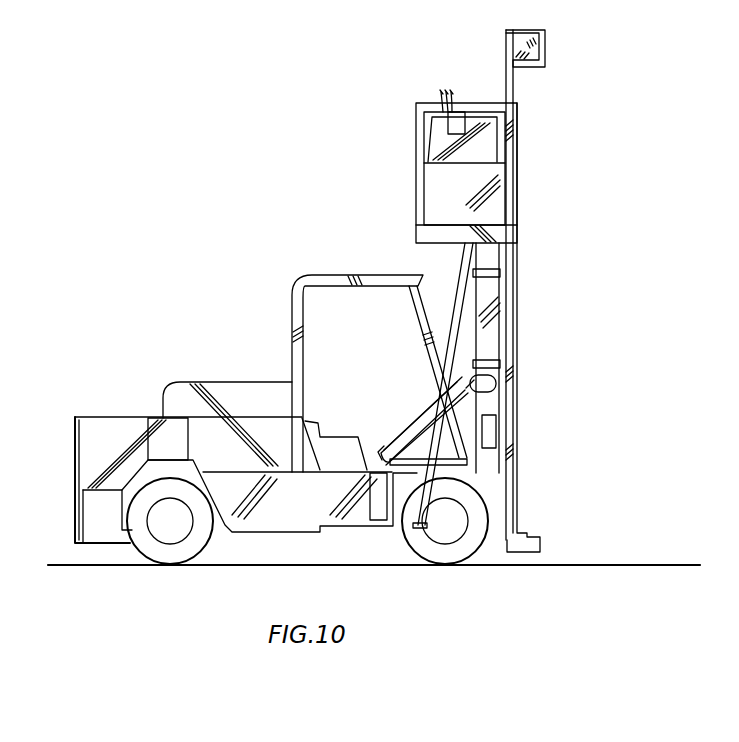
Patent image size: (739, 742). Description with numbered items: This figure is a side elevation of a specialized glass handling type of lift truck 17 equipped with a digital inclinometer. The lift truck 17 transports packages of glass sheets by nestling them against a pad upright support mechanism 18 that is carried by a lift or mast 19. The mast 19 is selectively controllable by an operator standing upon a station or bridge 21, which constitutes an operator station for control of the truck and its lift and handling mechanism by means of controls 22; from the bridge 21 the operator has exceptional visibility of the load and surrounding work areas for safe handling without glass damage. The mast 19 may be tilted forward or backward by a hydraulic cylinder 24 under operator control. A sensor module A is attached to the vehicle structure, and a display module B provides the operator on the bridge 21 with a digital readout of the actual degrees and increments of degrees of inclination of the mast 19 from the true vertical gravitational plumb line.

The lift truck 17 is at (150, 400).
The pad upright support mechanism 18 is at (513, 493).
The mast 19 is at (488, 323).
The bridge 21 is at (438, 190).
The controls 22 is at (444, 97).
The hydraulic cylinder 24 is at (418, 412).
The sensor module A is at (490, 432).
The display module B is at (462, 127).